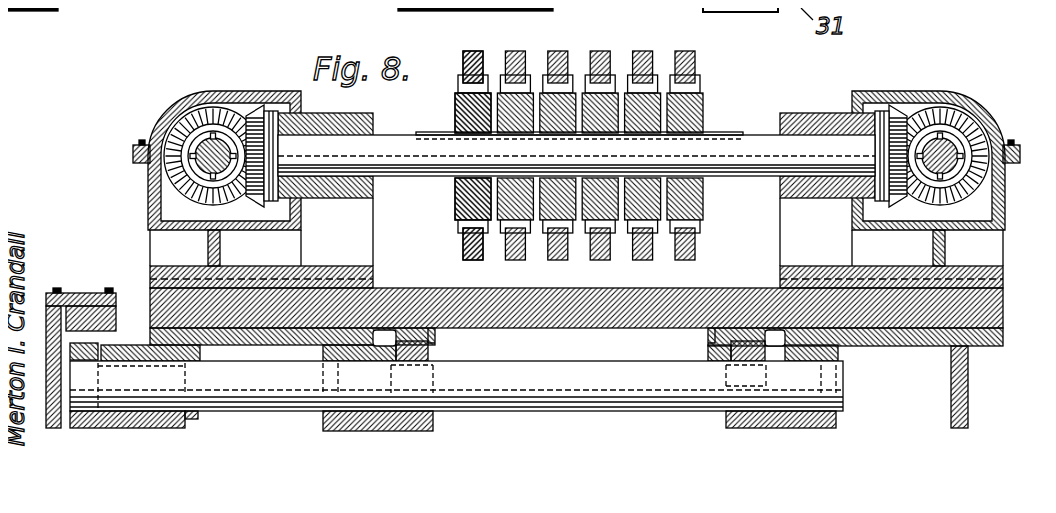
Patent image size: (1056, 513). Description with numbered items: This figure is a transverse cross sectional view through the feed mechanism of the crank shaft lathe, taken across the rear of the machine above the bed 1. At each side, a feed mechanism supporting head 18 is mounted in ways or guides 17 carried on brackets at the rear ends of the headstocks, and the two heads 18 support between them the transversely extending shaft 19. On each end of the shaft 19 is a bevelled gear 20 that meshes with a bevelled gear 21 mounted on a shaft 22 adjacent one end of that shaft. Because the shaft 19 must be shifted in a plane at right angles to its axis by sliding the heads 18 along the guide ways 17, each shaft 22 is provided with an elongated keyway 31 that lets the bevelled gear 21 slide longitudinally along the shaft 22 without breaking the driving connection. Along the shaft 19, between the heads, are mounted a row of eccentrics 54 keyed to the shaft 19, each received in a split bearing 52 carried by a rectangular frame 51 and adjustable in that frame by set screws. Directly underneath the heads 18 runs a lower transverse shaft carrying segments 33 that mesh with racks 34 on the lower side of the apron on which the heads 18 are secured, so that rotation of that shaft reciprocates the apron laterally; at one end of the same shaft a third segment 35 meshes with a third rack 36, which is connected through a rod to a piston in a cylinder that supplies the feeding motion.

The bed 1 is at (193, 413).
The ways or guides 17 is at (300, 265).
The feed mechanism supporting heads 18 is at (197, 84).
The transversely extending shaft 19 is at (743, 128).
The bevelled gears 20 is at (247, 104).
The bevelled gears 21 is at (160, 170).
The shafts 22 is at (165, 108).
The elongated keyways 31 is at (219, 135).
The segments 33 is at (425, 337).
The racks 34 is at (398, 330).
The third segment 35 is at (74, 343).
The third rack 36 is at (65, 300).
The rectangular frame 51 is at (543, 44).
The split bearing 52 is at (622, 46).
The eccentric 54 is at (637, 110).